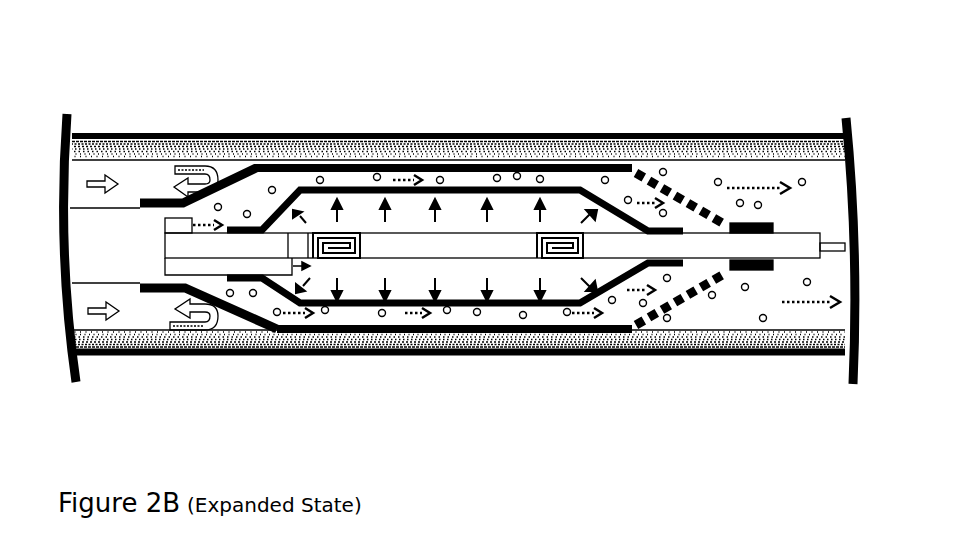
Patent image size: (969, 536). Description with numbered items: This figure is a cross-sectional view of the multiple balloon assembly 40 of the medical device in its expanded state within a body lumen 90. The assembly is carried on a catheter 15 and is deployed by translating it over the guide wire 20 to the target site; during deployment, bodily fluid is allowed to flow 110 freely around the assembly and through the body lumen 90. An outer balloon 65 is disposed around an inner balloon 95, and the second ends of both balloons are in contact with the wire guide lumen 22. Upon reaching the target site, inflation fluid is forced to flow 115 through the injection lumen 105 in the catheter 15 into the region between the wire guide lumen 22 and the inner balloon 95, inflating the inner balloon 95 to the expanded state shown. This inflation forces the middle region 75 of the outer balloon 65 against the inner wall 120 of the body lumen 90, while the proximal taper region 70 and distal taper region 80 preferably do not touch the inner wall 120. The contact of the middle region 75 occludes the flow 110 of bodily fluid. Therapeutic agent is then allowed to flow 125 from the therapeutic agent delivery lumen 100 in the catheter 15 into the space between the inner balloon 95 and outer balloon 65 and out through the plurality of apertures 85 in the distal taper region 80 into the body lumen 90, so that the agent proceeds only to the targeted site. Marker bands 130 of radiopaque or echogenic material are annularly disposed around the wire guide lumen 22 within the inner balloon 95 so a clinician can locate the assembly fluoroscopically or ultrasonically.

The catheter 15 is at (100, 247).
The guide wire 20 is at (824, 252).
The wire guide lumen 22 is at (790, 241).
The multiple balloon assembly 40 is at (58, 84).
The outer balloon 65 is at (157, 198).
The proximal taper region 70 is at (253, 170).
The middle region 75 is at (405, 164).
The distal taper region 80 is at (640, 176).
The plurality of apertures 85 is at (710, 215).
The body lumen 90 is at (774, 150).
The inner balloon 95 is at (342, 186).
The therapeutic agent delivery lumen 100 is at (182, 216).
The injection lumen 105 is at (222, 268).
The flow of bodily fluid 110 is at (173, 322).
The flow of inflation fluid 115 is at (430, 279).
The inner wall 120 is at (467, 165).
The flow of therapeutic agent 125 is at (209, 221).
The marker band 130 is at (557, 232).